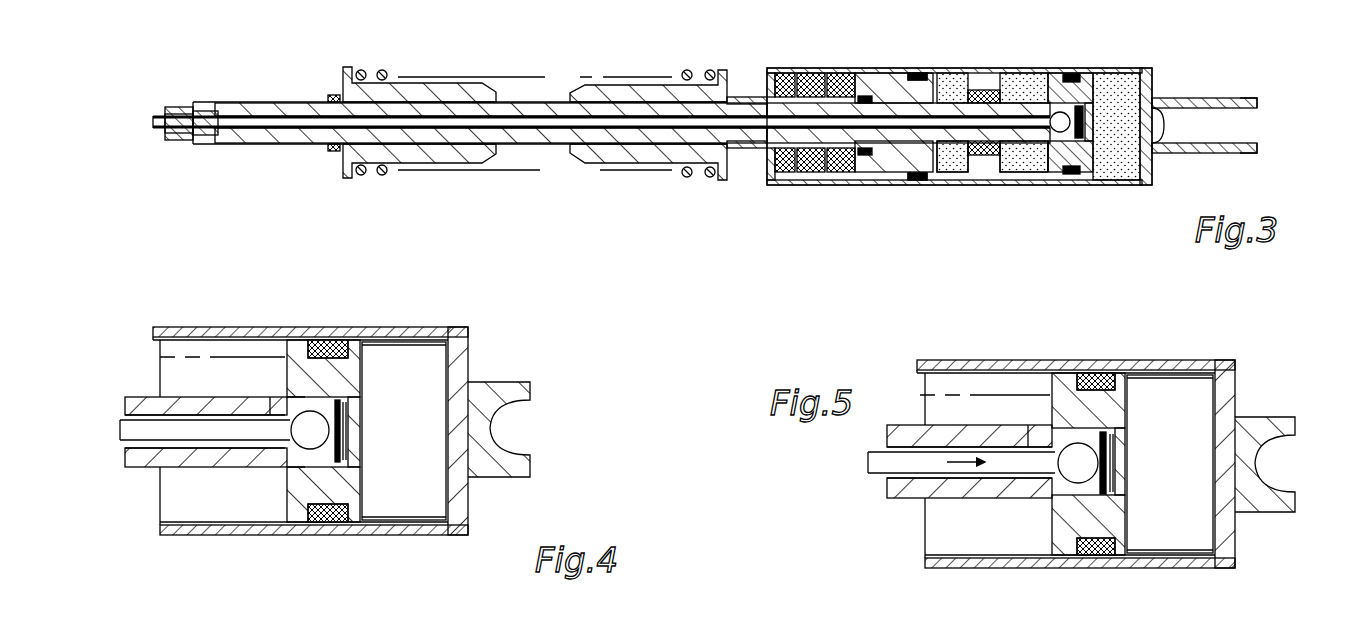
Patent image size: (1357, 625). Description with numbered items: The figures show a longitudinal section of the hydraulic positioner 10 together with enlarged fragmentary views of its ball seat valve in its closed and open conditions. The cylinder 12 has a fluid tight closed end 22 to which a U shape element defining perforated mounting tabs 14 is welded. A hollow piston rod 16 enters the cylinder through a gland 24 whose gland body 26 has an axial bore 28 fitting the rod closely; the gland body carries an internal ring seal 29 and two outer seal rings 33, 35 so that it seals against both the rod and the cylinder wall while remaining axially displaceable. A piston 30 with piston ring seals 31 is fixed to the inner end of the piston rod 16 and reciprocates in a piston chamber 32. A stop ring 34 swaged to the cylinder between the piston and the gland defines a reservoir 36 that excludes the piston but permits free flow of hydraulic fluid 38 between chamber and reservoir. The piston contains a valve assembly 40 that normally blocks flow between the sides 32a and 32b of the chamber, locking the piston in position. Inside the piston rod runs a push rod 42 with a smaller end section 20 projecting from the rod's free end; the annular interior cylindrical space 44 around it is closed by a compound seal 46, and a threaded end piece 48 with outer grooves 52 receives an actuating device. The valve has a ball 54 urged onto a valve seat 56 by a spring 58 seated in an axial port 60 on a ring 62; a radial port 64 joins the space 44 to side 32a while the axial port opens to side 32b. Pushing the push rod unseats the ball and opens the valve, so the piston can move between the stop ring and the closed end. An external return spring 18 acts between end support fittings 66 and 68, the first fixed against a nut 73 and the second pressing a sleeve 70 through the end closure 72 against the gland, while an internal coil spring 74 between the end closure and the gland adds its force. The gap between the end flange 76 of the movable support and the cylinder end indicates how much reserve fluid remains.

In FIG. 3, the hydraulic positioner 10 is at (796, 58).
In FIG. 3, the cylinder 12 is at (925, 72).
In FIG. 4, the cylinder 12 is at (318, 340).
In FIG. 5, the cylinder 12 is at (1085, 372).
In FIG. 3, the mounting tabs 14 is at (1258, 116).
In FIG. 4, the mounting tabs 14 is at (530, 428).
In FIG. 5, the mounting tabs 14 is at (1290, 460).
In FIG. 3, the piston rod 16 is at (538, 146).
In FIG. 4, the piston rod 16 is at (140, 470).
In FIG. 5, the piston rod 16 is at (895, 497).
In FIG. 3, the external return spring 18 is at (689, 180).
In FIG. 3, the end section 20 is at (160, 126).
In FIG. 4, the end section 20 is at (205, 430).
In FIG. 5, the end section 20 is at (961, 462).
In FIG. 3, the closed end 22 is at (1160, 100).
In FIG. 4, the closed end 22 is at (470, 502).
In FIG. 5, the closed end 22 is at (1228, 395).
In FIG. 3, the gland 24 is at (900, 142).
In FIG. 3, the gland body 26 is at (870, 85).
In FIG. 3, the axial bore 28 is at (911, 73).
In FIG. 3, the internal ring seal 29 is at (862, 157).
In FIG. 3, the piston 30 is at (1075, 175).
In FIG. 4, the piston 30 is at (300, 505).
In FIG. 5, the piston 30 is at (1062, 558).
In FIG. 3, the piston ring seals 31 is at (1085, 182).
In FIG. 3, the piston chamber 32 is at (1030, 185).
In FIG. 4, the piston chamber 32 is at (212, 530).
In FIG. 5, the piston chamber 32 is at (945, 560).
In FIG. 4, the side of the piston chamber 32a is at (185, 352).
In FIG. 5, the side of the piston chamber 32a is at (985, 393).
In FIG. 4, the side of the piston chamber 32b is at (433, 535).
In FIG. 5, the side of the piston chamber 32b is at (1190, 560).
In FIG. 3, the outer seal ring 33 is at (915, 182).
In FIG. 3, the stop ring 34 is at (985, 158).
In FIG. 3, the outer seal ring 35 is at (950, 175).
In FIG. 3, the reservoir 36 is at (960, 85).
In FIG. 3, the hydraulic fluid 38 is at (1025, 88).
In FIG. 3, the valve assembly 40 is at (1105, 90).
In FIG. 4, the valve assembly 40 is at (372, 402).
In FIG. 5, the valve assembly 40 is at (1152, 485).
In FIG. 3, the push rod 42 is at (290, 143).
In FIG. 4, the push rod 42 is at (128, 397).
In FIG. 5, the push rod 42 is at (880, 465).
In FIG. 4, the interior cylindrical space 44 is at (218, 412).
In FIG. 5, the interior cylindrical space 44 is at (975, 432).
In FIG. 3, the compound seal 46 is at (214, 137).
In FIG. 3, the threaded end piece 48 is at (172, 142).
In FIG. 3, the outer grooves 52 is at (166, 106).
In FIG. 4, the ball 54 is at (322, 402).
In FIG. 5, the ball 54 is at (1080, 440).
In FIG. 4, the valve seat 56 is at (300, 452).
In FIG. 4, the spring 58 is at (357, 428).
In FIG. 5, the spring 58 is at (1108, 455).
In FIG. 4, the axial port 60 is at (360, 443).
In FIG. 5, the axial port 60 is at (1115, 478).
In FIG. 4, the ring 62 is at (352, 470).
In FIG. 5, the ring 62 is at (1128, 485).
In FIG. 4, the radial port 64 is at (272, 398).
In FIG. 5, the radial port 64 is at (1028, 427).
In FIG. 3, the end support fitting 66 is at (455, 165).
In FIG. 3, the end support fitting 68 is at (623, 165).
In FIG. 3, the sleeve 70 is at (745, 150).
In FIG. 3, the end closure 72 is at (770, 70).
In FIG. 3, the nut 73 is at (334, 152).
In FIG. 3, the internal coil spring 74 is at (810, 175).
In FIG. 3, the end flange 76 is at (712, 68).